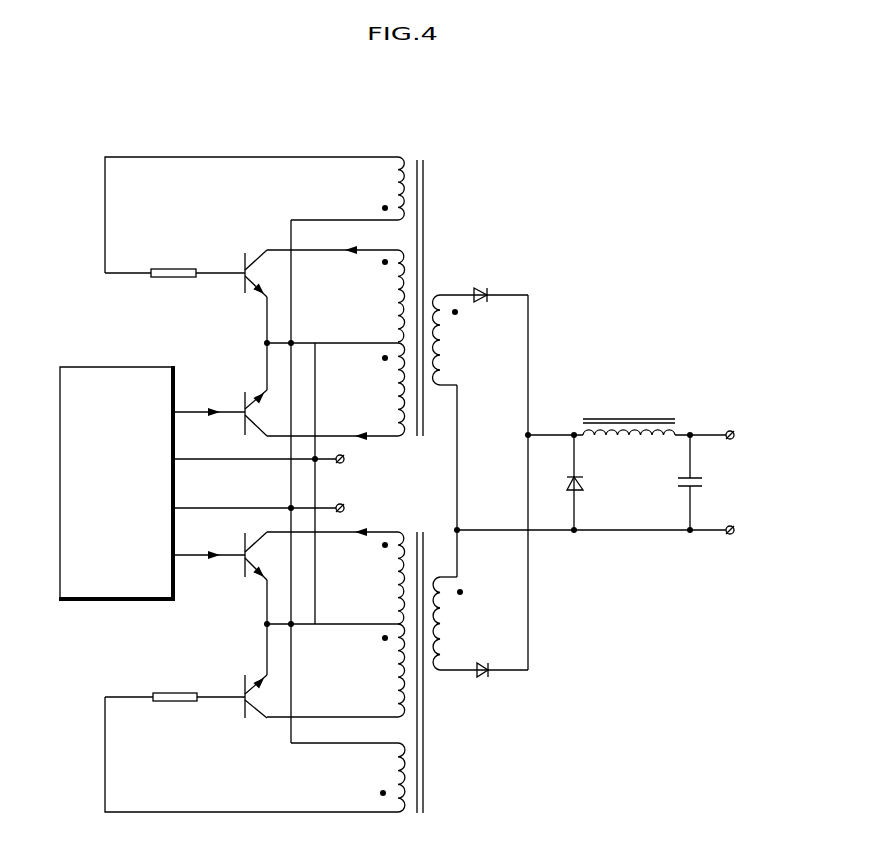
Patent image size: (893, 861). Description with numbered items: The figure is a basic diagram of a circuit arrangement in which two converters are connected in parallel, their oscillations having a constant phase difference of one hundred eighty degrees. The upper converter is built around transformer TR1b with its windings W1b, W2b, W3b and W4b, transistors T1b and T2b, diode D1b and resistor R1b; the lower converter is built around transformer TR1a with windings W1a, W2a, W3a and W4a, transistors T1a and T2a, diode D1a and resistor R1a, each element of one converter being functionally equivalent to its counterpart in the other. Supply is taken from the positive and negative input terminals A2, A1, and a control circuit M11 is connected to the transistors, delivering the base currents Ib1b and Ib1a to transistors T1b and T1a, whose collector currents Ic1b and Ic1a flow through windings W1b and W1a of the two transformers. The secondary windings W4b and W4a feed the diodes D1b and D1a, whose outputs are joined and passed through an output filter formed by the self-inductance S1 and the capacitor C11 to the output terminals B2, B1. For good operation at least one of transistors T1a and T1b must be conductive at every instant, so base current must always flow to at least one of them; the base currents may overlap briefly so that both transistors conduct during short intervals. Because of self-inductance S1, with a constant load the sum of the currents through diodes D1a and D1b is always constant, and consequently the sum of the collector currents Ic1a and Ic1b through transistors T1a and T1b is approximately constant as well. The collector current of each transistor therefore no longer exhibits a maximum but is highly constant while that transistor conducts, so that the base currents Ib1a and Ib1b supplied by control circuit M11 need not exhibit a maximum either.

The control circuit M11 is at (93, 590).
The resistor R1b is at (159, 268).
The resistor R1a is at (152, 700).
The transistor T2b is at (241, 281).
The transistor T1b is at (242, 403).
The transistor T1a is at (240, 572).
The transistor T2a is at (242, 712).
The collector current Ic1b is at (332, 333).
The collector current Ic1a is at (332, 543).
The base current Ib1b is at (209, 426).
The base current Ib1a is at (209, 545).
The winding W3b is at (347, 188).
The winding W2b is at (380, 296).
The winding W1b is at (381, 389).
The winding W1a is at (381, 578).
The winding W2a is at (381, 670).
The winding W3a is at (348, 777).
The winding W4b is at (459, 340).
The winding W4a is at (458, 623).
The transformer TR1b is at (427, 172).
The transformer TR1a is at (428, 799).
The diode D1b is at (484, 282).
The diode D1a is at (484, 687).
The input terminal A2 is at (280, 461).
The input terminal A1 is at (280, 510).
The self-inductance S1 is at (610, 440).
The capacitor C11 is at (705, 484).
The output terminal B2 is at (721, 421).
The output terminal B1 is at (736, 545).